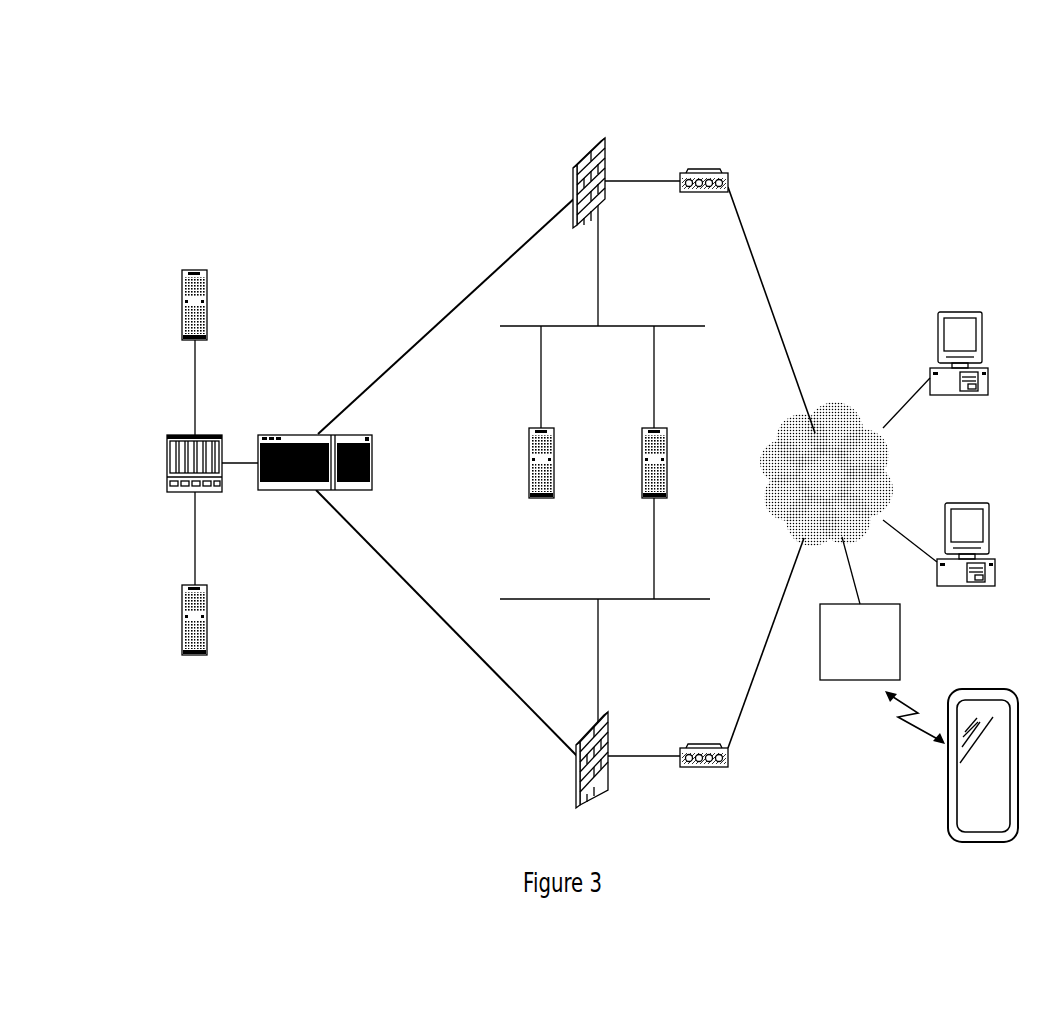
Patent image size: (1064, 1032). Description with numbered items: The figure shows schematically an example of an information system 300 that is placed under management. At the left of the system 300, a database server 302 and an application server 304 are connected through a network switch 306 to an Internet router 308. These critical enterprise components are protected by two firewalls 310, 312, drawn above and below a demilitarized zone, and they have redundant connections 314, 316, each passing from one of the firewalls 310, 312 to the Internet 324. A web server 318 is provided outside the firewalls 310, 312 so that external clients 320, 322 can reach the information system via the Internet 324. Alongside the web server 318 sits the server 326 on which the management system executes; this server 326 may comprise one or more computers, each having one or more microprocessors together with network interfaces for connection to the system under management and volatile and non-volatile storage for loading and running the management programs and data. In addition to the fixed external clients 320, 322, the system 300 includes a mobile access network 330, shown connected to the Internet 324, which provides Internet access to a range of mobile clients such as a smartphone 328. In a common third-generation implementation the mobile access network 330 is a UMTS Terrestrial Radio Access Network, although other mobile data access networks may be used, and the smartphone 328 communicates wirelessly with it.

The information system 300 is at (912, 115).
The database server 302 is at (197, 264).
The application server 304 is at (182, 620).
The network switch 306 is at (202, 434).
The Internet router 308 is at (300, 434).
The firewall 310 is at (581, 158).
The firewall 312 is at (578, 770).
The redundant connection 314 is at (703, 170).
The redundant connection 316 is at (703, 745).
The web server 318 is at (538, 498).
The external client 320 is at (960, 312).
The external client 322 is at (989, 523).
The Internet 324 is at (835, 423).
The server 326 is at (665, 430).
The smartphone 328 is at (953, 779).
The mobile access network 330 is at (852, 668).